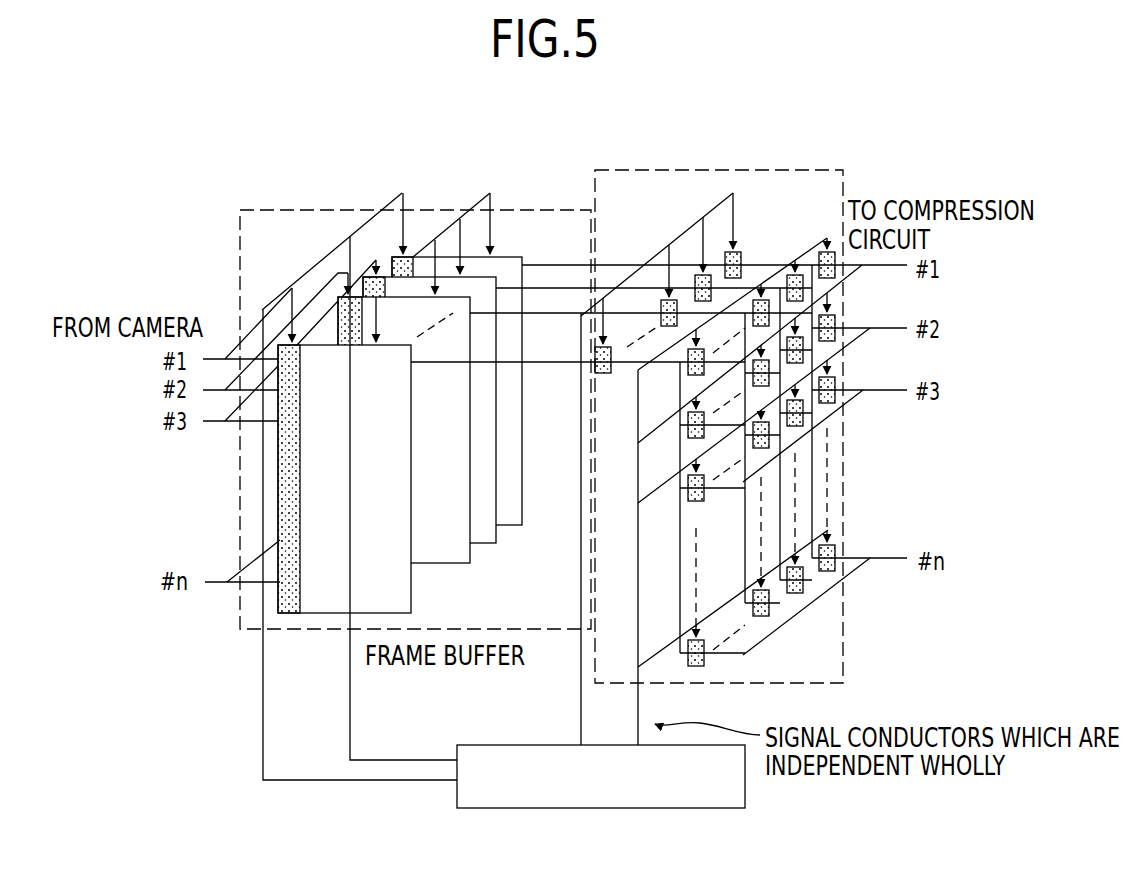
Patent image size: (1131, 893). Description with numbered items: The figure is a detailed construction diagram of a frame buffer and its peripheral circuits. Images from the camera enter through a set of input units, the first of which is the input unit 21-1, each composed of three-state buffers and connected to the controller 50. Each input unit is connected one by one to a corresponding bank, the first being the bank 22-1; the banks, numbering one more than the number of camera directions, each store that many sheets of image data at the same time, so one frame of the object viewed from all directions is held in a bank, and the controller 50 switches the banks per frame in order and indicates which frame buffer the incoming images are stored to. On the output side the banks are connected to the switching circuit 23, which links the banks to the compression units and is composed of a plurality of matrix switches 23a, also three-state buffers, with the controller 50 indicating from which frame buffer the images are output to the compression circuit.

The input unit 21-1 is at (283, 598).
The bank 22-1 is at (330, 503).
The switching circuit 23 is at (759, 457).
The matrix switch 23a is at (827, 538).
The controller 50 is at (603, 808).